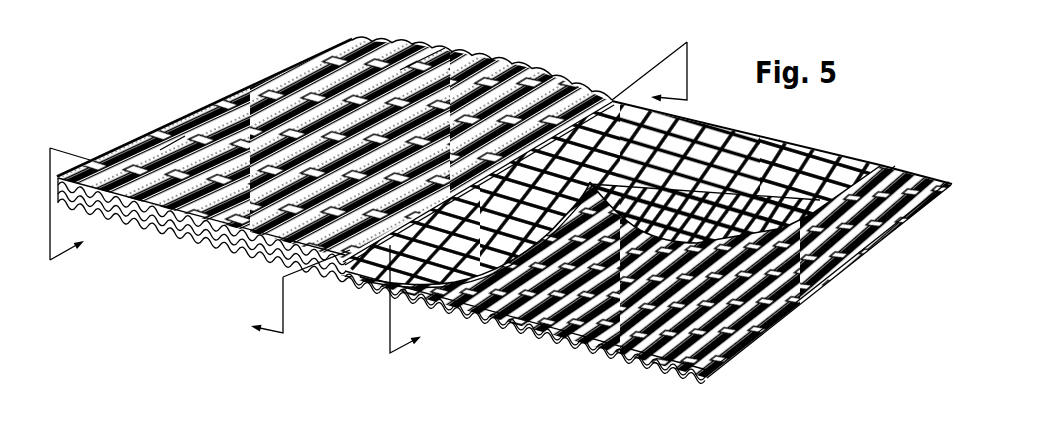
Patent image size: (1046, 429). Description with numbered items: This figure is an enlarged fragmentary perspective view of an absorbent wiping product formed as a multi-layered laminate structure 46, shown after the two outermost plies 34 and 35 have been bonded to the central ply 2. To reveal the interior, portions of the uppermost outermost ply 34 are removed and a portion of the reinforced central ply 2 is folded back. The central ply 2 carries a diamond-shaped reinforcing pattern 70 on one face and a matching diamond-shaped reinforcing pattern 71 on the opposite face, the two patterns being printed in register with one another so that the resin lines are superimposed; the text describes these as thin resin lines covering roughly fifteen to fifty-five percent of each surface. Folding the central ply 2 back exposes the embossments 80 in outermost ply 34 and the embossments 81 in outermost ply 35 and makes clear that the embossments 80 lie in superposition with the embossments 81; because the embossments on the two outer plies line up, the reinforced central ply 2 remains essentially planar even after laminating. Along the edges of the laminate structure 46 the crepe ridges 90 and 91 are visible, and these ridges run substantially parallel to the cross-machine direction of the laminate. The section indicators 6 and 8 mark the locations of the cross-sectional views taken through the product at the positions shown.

The central ply 2 is at (797, 150).
The outermost ply 34 is at (612, 90).
The outermost ply 35 is at (667, 367).
The laminate structure 46 is at (166, 138).
The diamond-shaped reinforcing pattern 70 is at (733, 134).
The diamond-shaped reinforcing pattern 71 is at (575, 250).
The embossments 80 is at (432, 56).
The embossments 81 is at (887, 174).
The crepe ridges 90 is at (207, 232).
The crepe ridges 91 is at (253, 258).
The section line 6- 6 is at (243, 250).
The section line 8- 8 is at (459, 187).